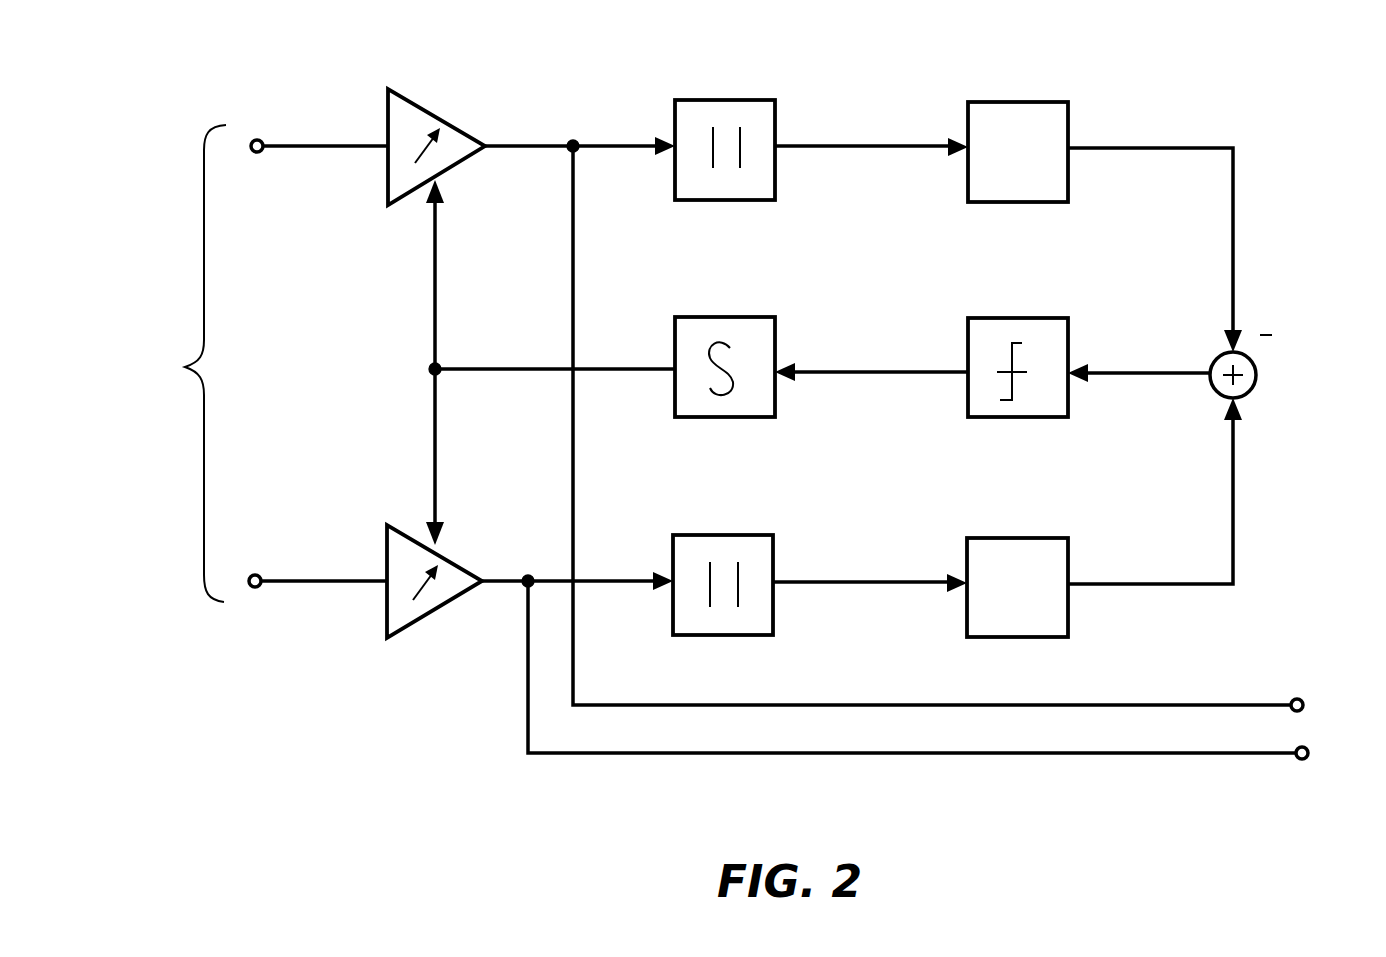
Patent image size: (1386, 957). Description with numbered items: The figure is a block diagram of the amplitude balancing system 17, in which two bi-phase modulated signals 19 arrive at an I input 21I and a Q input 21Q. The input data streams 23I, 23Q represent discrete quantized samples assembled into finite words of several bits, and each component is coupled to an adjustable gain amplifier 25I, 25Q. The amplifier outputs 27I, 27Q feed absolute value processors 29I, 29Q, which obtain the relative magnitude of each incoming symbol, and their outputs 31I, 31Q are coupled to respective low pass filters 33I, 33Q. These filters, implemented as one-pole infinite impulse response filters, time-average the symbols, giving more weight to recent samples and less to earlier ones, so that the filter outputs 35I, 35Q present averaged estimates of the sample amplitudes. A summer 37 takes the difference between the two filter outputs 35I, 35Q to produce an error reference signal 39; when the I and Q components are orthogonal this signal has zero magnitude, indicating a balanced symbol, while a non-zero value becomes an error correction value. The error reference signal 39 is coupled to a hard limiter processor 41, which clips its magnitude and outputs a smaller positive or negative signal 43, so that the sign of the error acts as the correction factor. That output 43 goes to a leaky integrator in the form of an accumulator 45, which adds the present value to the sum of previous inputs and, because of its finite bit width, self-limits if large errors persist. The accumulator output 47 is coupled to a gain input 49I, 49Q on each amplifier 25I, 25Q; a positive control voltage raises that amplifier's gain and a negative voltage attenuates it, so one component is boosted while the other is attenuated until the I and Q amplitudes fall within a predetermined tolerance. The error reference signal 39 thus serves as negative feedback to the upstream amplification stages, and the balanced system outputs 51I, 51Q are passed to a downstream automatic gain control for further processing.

The amplitude balancing system 17 is at (478, 777).
The bi-phase modulated signals 19 is at (194, 363).
The I input 21I is at (257, 139).
The Q input 21Q is at (260, 589).
The I input signal 23I is at (309, 136).
The Q input signal 23Q is at (299, 591).
The I adjustable gain amplifier 25I is at (425, 108).
The Q adjustable gain amplifier 25Q is at (445, 605).
The I amplifier output 27I is at (497, 136).
The Q amplifier output 27Q is at (496, 591).
The I absolute value processor 29I is at (710, 100).
The Q absolute value processor 29Q is at (718, 635).
The I absolute value processor output 31I is at (838, 136).
The Q absolute value processor output 31Q is at (827, 592).
The I low pass filter 33I is at (1020, 102).
The Q low pass filter 33Q is at (1002, 637).
The I low pass filter output 35I is at (1125, 138).
The Q low pass filter output 35Q is at (1121, 594).
The summer 37 is at (1257, 378).
The error reference signal 39 is at (1124, 383).
The hard limiter processor 41 is at (1008, 318).
The hard limiter output 43 is at (851, 382).
The accumulator 45 is at (711, 317).
The accumulator output 47 is at (477, 379).
The I gain input 49I is at (428, 183).
The Q gain input 49Q is at (442, 540).
The I system output 51I is at (1297, 698).
The Q system output 51Q is at (1302, 761).